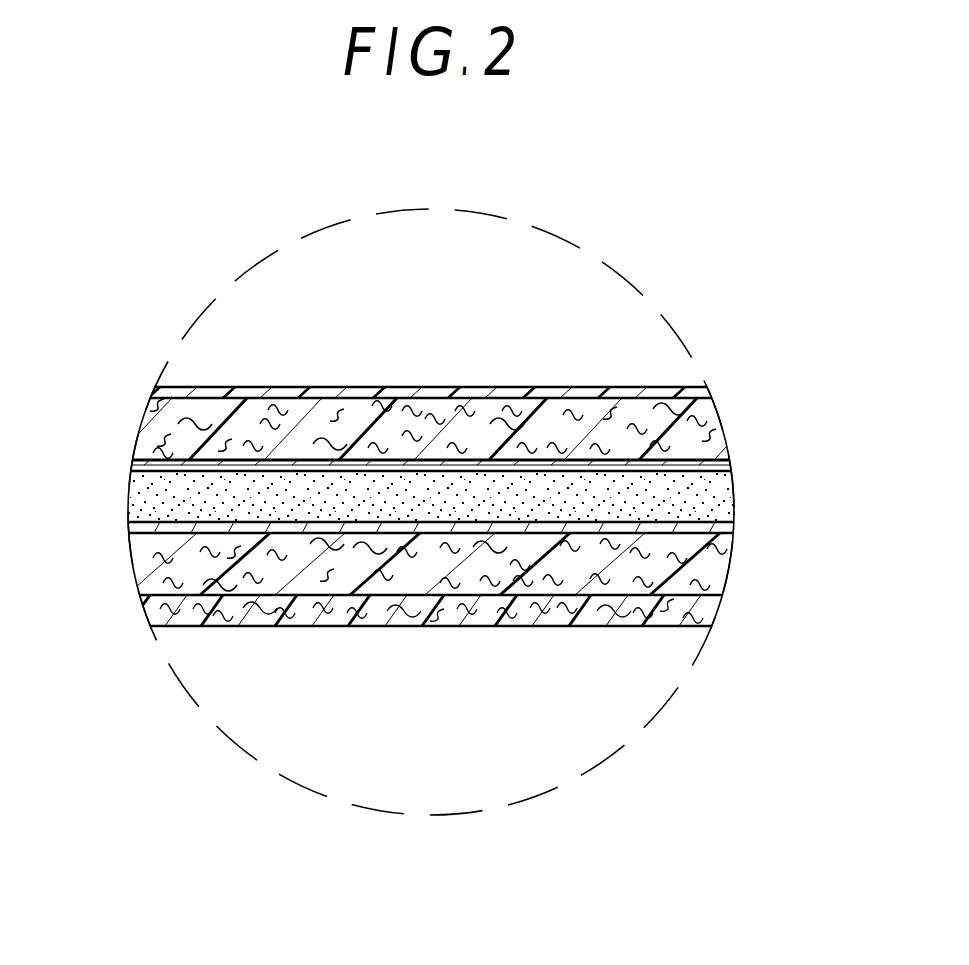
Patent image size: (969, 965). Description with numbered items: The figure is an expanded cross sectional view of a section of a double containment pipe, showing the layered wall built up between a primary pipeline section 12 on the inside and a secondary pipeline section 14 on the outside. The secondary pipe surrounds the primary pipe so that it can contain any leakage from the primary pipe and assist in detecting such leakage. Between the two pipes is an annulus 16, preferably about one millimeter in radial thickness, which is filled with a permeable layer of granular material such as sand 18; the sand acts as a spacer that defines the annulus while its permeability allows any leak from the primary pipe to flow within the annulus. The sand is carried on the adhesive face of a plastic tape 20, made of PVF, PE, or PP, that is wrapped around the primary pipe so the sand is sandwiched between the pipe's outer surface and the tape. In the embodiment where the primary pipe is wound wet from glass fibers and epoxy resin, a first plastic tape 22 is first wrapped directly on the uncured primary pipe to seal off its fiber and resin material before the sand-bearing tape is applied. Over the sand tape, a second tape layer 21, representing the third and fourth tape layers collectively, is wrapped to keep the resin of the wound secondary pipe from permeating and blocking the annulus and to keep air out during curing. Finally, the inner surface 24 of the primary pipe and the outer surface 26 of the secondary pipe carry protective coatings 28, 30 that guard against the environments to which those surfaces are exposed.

The primary pipeline section 12 is at (710, 570).
The secondary pipeline section 14 is at (690, 430).
The annulus 16 is at (720, 507).
The sand 18 is at (738, 487).
The plastic tape 20 is at (128, 482).
The second tape layer 21 is at (140, 462).
The first plastic tape 22 is at (123, 527).
The inner surface 24 is at (140, 606).
The outer surface 26 is at (155, 391).
The protective coating 28 is at (378, 623).
The protective coating 30 is at (400, 388).